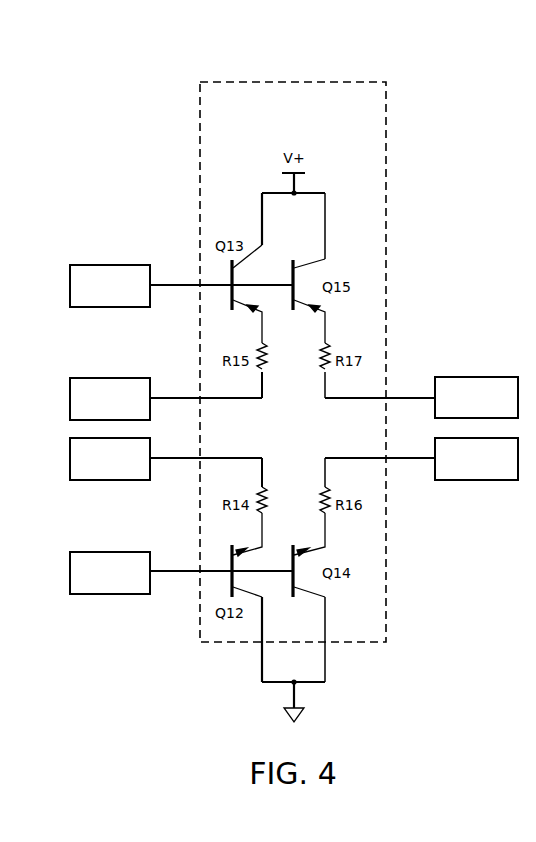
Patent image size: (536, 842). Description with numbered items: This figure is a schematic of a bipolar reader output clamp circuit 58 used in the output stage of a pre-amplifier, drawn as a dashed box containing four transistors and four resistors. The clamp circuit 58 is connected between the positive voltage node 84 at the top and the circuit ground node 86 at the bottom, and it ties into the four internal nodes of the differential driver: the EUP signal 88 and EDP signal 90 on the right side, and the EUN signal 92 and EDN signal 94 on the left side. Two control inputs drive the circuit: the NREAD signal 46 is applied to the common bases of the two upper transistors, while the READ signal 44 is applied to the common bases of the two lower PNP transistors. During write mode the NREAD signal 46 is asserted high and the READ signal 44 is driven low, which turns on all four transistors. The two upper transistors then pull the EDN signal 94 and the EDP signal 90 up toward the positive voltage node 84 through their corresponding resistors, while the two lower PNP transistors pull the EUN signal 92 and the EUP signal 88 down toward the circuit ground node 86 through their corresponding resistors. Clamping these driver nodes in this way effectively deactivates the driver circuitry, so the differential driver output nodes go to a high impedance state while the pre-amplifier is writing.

The clamp circuit 58 is at (333, 78).
The positive voltage node 84 is at (326, 225).
The circuit ground node 86 is at (326, 662).
The NREAD signal 46 is at (187, 283).
The EDN signal 94 is at (187, 395).
The EUN signal 92 is at (187, 461).
The READ signal 44 is at (187, 574).
The EDP signal 90 is at (399, 395).
The EUP signal 88 is at (399, 461).